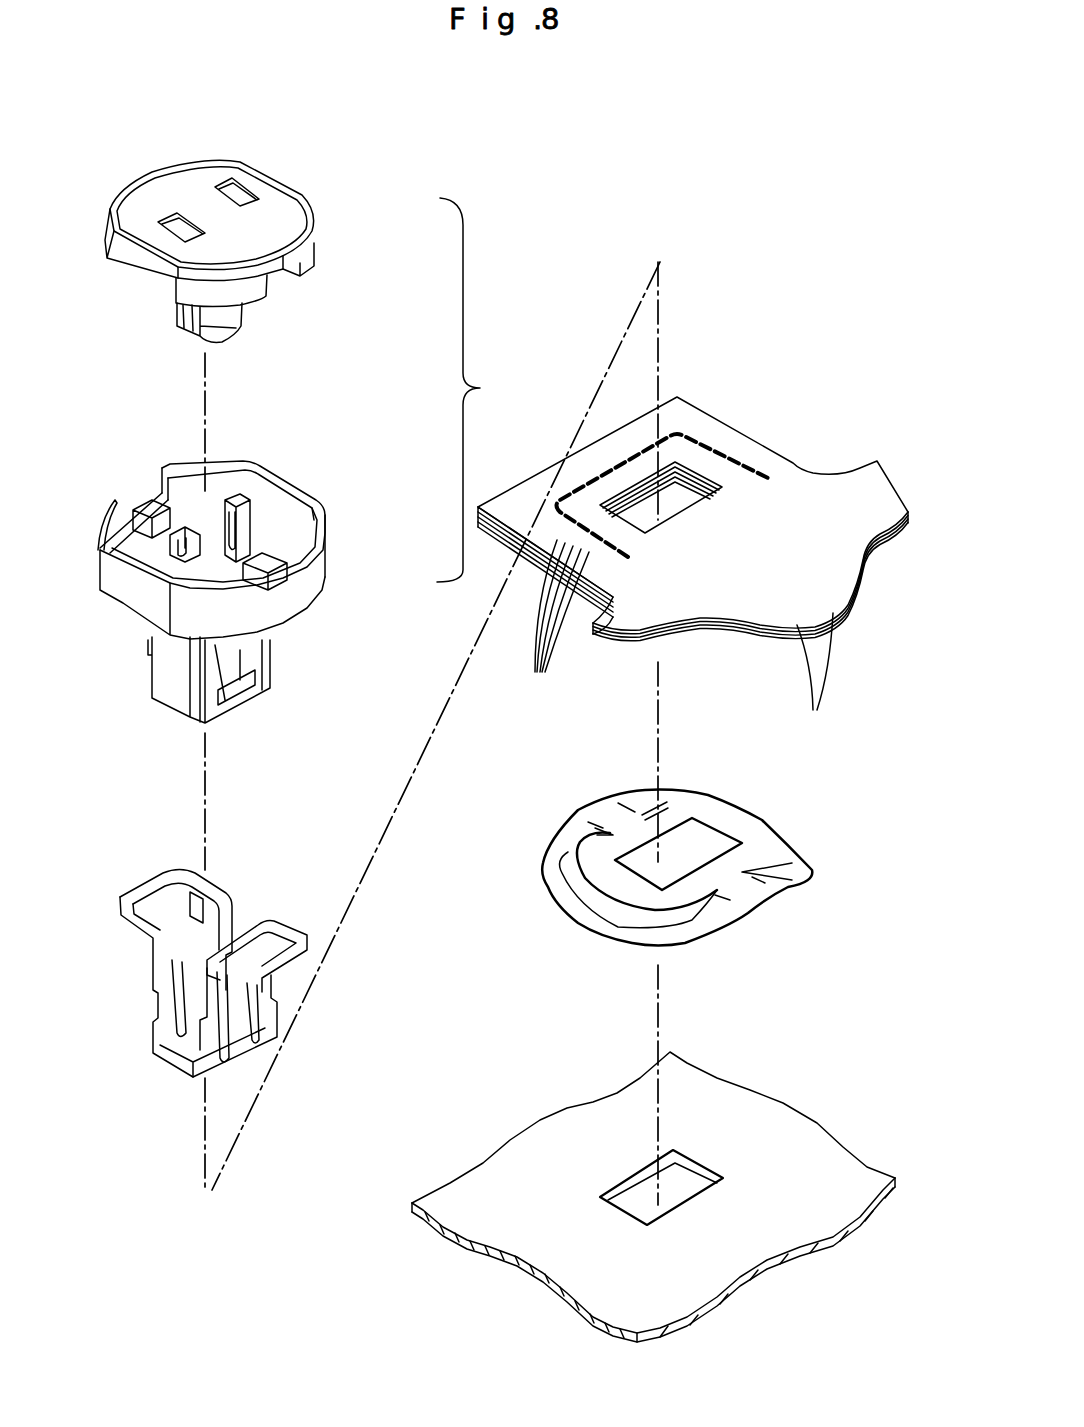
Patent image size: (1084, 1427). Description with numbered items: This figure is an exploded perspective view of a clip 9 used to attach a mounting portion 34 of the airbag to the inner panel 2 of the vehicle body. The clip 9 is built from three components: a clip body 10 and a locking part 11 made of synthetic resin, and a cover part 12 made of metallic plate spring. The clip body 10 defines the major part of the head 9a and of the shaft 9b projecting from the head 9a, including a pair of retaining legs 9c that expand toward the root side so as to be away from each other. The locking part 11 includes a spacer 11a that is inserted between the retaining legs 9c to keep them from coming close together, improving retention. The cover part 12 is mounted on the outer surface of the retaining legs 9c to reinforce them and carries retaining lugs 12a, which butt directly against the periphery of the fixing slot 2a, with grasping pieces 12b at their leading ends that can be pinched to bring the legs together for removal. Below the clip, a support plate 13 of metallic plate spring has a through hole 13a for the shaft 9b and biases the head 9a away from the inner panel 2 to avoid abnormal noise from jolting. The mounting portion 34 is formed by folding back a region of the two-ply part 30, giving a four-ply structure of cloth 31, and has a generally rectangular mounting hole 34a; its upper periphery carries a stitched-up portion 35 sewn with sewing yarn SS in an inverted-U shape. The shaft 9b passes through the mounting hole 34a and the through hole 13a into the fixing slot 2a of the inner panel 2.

The inner panel 2 is at (653, 1175).
The fixing slot 2a is at (693, 1167).
The clip 9 is at (471, 390).
The head 9a is at (267, 490).
The shaft 9b is at (170, 653).
The retaining legs 9c is at (235, 660).
The clip body 10 is at (277, 589).
The locking part 11 is at (281, 272).
The spacer 11a is at (223, 322).
The cover part 12 is at (276, 828).
The retaining lugs 12a is at (180, 960).
The grasping pieces 12b is at (198, 892).
The support plate 13 is at (643, 888).
The through hole 13a is at (700, 842).
The two-ply part 30 is at (737, 590).
The cloth part 31 is at (678, 642).
The mounting portion 34 is at (693, 519).
The mounting hole 34a is at (687, 490).
The stitched-up portion 35 is at (622, 448).
The sewing yarn SS is at (567, 537).